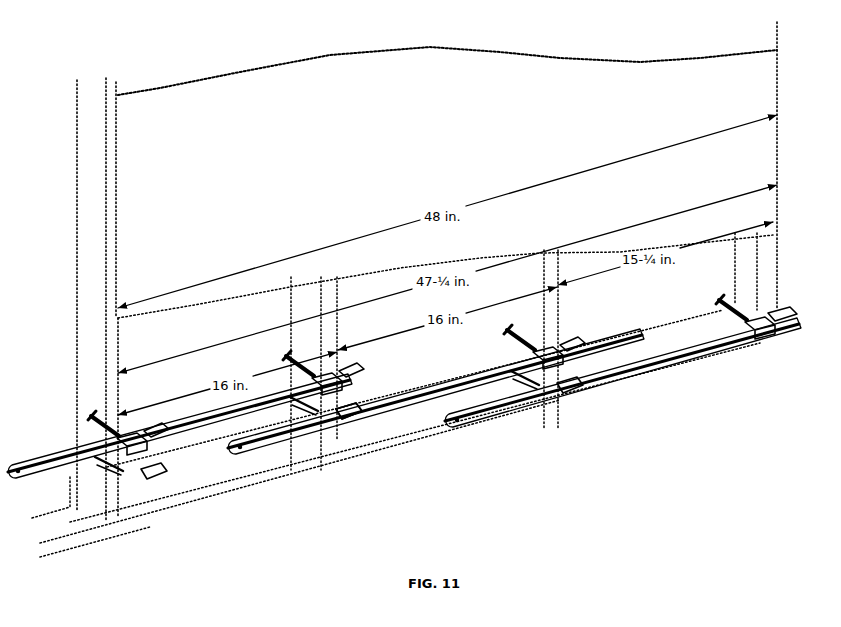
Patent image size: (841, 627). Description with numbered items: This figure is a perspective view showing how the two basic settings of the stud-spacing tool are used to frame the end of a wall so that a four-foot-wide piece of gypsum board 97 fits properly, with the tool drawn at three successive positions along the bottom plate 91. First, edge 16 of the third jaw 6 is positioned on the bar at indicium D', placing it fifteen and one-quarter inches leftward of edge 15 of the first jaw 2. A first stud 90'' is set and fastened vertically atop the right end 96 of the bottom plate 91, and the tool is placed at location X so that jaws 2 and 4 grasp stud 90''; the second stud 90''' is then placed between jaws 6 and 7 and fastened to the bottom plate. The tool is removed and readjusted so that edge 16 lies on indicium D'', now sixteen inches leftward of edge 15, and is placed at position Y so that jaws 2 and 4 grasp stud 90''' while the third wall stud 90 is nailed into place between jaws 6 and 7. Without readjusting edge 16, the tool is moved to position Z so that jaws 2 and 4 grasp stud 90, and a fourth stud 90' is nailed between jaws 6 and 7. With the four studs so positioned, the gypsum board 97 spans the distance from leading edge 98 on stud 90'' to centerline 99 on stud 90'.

The first jaw 2 is at (773, 313).
The second jaw 4 is at (747, 303).
The third jaw 6 is at (562, 398).
The fourth jaw 7 is at (553, 392).
The edge 15 is at (798, 313).
The edge 16 is at (346, 425).
The third wall stud 90 is at (306, 441).
The fourth stud 90' is at (123, 495).
The first stud 90'' is at (745, 364).
The second stud 90''' is at (518, 419).
The bottom plate 91 is at (622, 352).
The right end of bottom plate 96 is at (770, 333).
The gypsum board 97 is at (167, 230).
The leading edge 98 is at (779, 190).
The centerline 99 is at (118, 320).
The location X is at (687, 365).
The position Y is at (418, 410).
The position Z is at (191, 438).
The indicium D' is at (553, 449).
The indicium D'' is at (327, 488).